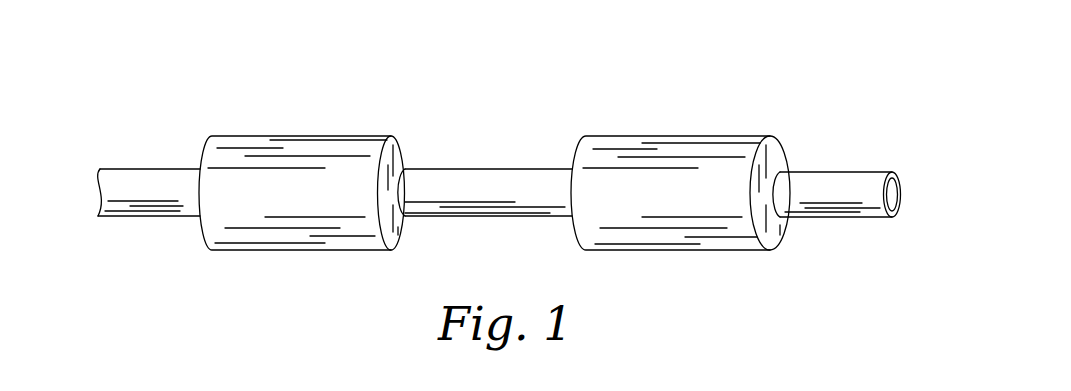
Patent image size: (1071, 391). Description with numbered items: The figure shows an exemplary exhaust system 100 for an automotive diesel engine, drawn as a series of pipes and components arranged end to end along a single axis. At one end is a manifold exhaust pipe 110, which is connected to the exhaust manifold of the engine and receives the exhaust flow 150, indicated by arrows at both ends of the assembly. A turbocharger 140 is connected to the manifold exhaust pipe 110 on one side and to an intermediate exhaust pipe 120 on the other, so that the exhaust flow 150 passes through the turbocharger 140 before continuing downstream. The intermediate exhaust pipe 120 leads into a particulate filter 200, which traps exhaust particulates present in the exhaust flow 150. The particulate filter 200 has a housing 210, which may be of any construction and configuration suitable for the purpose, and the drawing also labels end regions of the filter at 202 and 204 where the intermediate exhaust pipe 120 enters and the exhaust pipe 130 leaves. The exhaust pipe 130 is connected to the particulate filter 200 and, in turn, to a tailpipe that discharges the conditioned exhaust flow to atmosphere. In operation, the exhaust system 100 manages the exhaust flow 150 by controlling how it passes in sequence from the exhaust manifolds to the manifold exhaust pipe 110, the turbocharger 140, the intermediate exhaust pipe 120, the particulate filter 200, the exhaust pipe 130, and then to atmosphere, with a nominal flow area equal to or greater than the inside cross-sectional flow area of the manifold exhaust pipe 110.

The exhaust system 100 is at (803, 67).
The manifold exhaust pipe 110 is at (830, 218).
The intermediate exhaust pipe 120 is at (534, 169).
The exhaust pipe 130 is at (164, 169).
The turbocharger 140 is at (685, 136).
The exhaust flow 150 is at (52, 193).
The particulate filter 200 is at (297, 136).
The distal face of hub 202 is at (420, 156).
The proximal face of hub 204 is at (186, 236).
The housing 210 is at (285, 250).